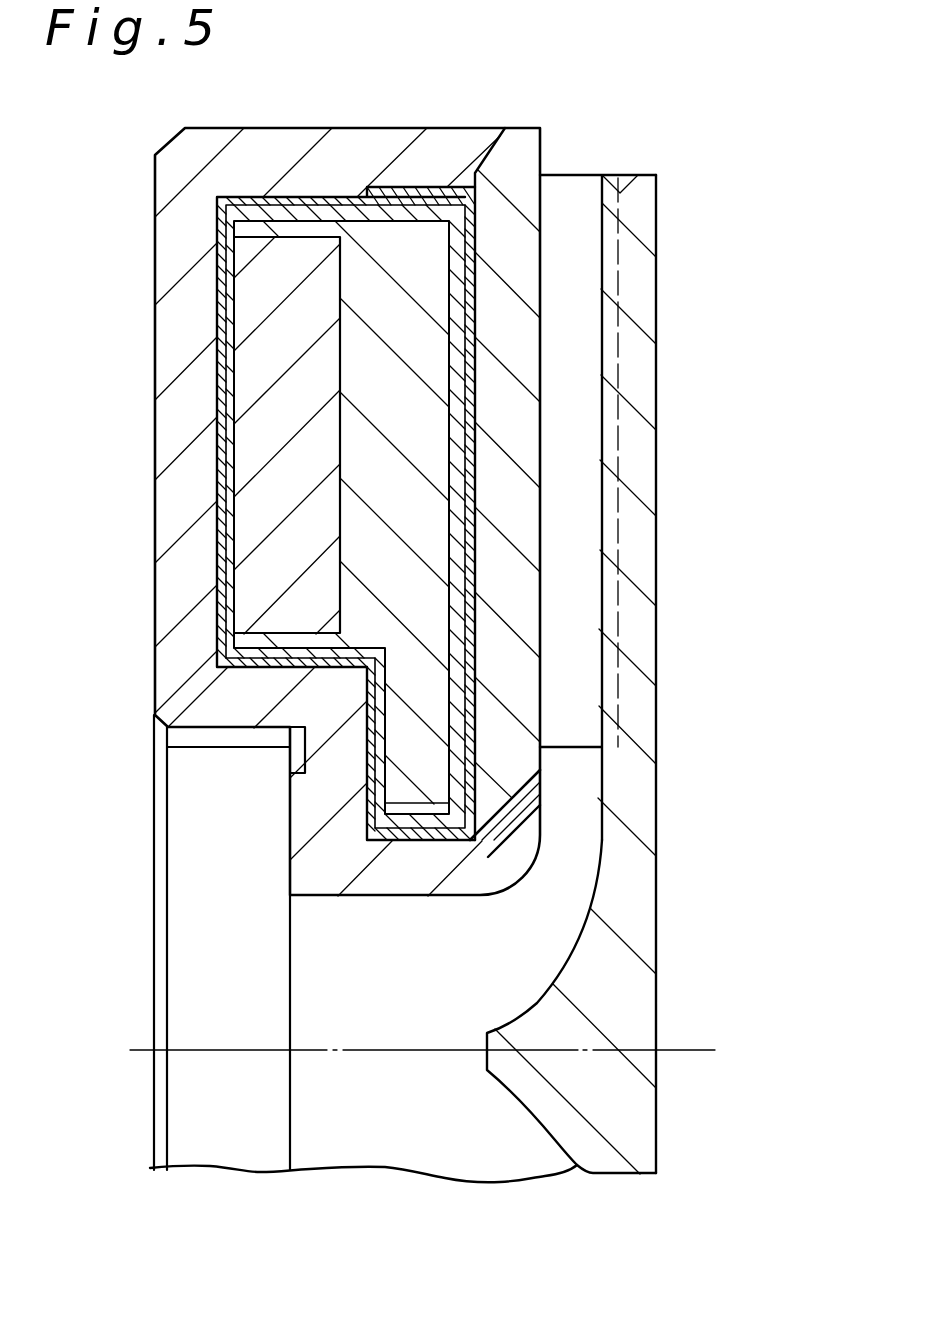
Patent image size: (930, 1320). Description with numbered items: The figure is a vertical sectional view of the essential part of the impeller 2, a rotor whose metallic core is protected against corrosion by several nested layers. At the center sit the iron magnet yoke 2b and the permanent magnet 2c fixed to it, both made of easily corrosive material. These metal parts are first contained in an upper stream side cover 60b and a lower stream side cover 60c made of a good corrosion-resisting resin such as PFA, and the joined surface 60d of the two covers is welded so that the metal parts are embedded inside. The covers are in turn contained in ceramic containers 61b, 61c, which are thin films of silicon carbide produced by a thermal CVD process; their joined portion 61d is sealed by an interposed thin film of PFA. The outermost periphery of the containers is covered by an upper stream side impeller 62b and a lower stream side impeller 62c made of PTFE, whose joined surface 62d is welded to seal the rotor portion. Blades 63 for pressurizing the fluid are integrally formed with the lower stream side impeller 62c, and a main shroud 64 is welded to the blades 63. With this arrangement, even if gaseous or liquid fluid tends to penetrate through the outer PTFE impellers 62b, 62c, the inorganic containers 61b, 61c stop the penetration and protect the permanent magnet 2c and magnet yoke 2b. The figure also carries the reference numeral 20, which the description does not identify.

The impeller 2 is at (341, 420).
The magnet yoke 2b is at (412, 425).
The permanent magnet 2c is at (289, 370).
The axis of rotation 20 is at (680, 1048).
The upper stream side cover 60b is at (337, 217).
The lower stream side cover 60c is at (458, 216).
The joined surface 60d is at (426, 207).
The ceramic container 61b is at (262, 200).
The ceramic container 61c is at (484, 853).
The joined portion 61d is at (393, 190).
The upper stream side impeller 62b is at (175, 366).
The lower stream side impeller 62c is at (523, 152).
The joined surface 62d is at (470, 162).
The blades 63 is at (578, 447).
The main shroud 64 is at (656, 787).